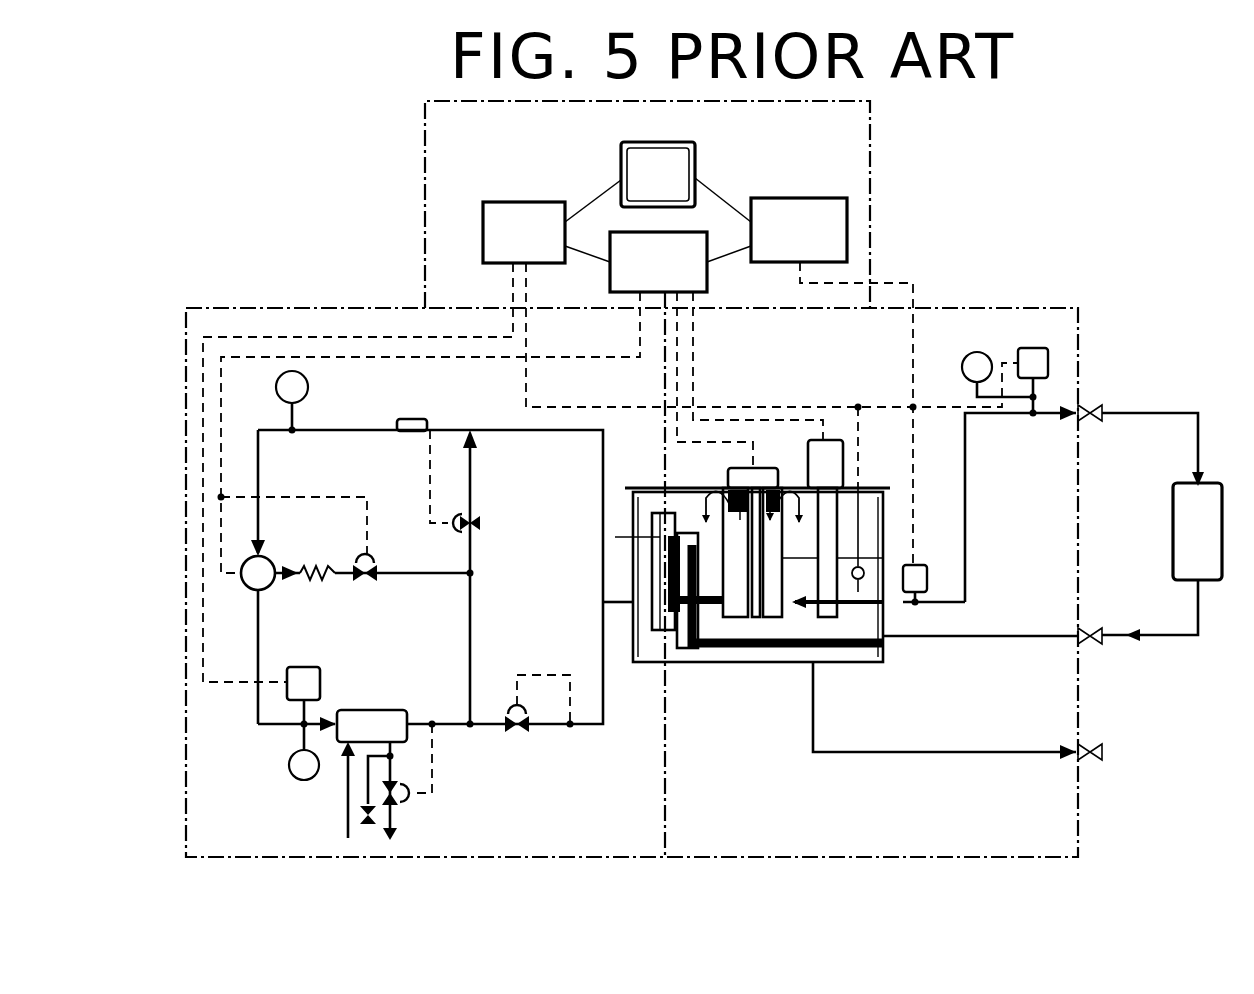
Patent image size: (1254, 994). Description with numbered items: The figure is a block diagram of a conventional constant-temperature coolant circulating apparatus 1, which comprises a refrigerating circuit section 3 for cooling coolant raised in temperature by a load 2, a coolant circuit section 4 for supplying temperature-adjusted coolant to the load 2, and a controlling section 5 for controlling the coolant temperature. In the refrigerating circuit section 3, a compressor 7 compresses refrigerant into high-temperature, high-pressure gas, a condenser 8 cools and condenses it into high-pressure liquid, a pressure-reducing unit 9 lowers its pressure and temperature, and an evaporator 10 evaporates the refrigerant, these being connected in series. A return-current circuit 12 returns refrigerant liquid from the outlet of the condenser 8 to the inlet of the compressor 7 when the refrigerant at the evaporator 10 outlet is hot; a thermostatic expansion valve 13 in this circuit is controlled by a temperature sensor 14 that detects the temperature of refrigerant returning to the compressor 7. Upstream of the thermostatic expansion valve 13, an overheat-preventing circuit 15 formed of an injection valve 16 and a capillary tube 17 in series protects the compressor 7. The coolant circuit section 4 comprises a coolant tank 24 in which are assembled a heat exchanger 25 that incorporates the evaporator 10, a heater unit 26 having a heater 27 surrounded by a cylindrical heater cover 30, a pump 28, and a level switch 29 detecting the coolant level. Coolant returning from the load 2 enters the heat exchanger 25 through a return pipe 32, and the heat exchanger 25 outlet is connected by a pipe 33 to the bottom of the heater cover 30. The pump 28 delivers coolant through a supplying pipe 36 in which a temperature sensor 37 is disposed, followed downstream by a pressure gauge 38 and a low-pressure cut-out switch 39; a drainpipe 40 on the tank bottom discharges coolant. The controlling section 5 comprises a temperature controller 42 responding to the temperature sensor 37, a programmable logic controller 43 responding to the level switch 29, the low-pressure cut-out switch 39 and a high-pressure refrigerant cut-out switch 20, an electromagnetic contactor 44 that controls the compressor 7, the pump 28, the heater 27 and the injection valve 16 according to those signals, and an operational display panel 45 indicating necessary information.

The constant-temperature coolant circulating apparatus 1 is at (1072, 130).
The load 2 is at (1197, 531).
The refrigerating circuit section 3 is at (188, 286).
The coolant circuit section 4 is at (1094, 292).
The controlling section 5 is at (877, 193).
The compressor 7 is at (252, 584).
The condenser 8 is at (376, 710).
The pressure-reducing unit 9 is at (518, 736).
The evaporator 10 is at (618, 537).
The return-current circuit 12 is at (472, 468).
The thermostatic expansion valve 13 is at (482, 520).
The temperature sensor 14 is at (412, 418).
The overheat-preventing circuit 15 is at (428, 577).
The injection valve 16 is at (368, 568).
The capillary tube 17 is at (316, 570).
The high-pressure refrigerant cut-out switch 20 is at (312, 660).
The coolant tank 24 is at (728, 662).
The heat exchanger 25 is at (662, 632).
The heater unit 26 is at (741, 462).
The heater 27 is at (760, 662).
The pump 28 is at (828, 462).
The level switch 29 is at (887, 562).
The heater cover 30 is at (815, 662).
The return pipe 32 is at (943, 640).
The pipe 33 is at (700, 650).
The supplying pipe 36 is at (965, 468).
The temperature sensor 37 is at (927, 578).
The pressure gauge 38 is at (977, 352).
The low-pressure cut-out switch 39 is at (1034, 348).
The drainpipe 40 is at (935, 755).
The temperature controller 42 is at (771, 220).
The programmable logic controller 43 is at (552, 221).
The electromagnetic contactor/electromagnetic switch 44 is at (610, 544).
The operational display panel 45 is at (658, 174).